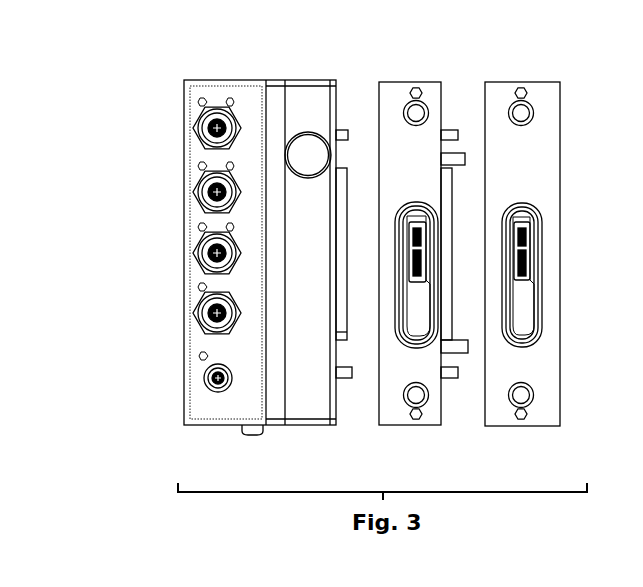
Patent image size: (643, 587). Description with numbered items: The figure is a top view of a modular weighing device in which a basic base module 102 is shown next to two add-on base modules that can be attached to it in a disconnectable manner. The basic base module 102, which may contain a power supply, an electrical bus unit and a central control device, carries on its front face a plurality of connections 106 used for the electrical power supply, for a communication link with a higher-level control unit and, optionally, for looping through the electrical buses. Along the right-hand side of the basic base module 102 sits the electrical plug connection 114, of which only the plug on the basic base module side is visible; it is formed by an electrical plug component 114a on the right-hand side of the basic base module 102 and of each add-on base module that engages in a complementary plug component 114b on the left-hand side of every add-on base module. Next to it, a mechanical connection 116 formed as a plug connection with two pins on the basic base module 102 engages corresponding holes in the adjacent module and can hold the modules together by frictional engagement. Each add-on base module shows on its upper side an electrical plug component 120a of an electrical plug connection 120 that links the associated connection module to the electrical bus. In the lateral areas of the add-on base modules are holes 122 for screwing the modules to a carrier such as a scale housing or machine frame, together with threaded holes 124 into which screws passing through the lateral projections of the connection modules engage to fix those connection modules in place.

The basic base module 102 is at (174, 111).
The connections 106 is at (207, 377).
The electrical plug connection 114 is at (372, 290).
The electrical plug component 114a is at (337, 233).
The complementary plug component 114b is at (477, 232).
The mechanical connection 116 is at (346, 386).
The electrical plug connection 120 is at (549, 229).
The electrical plug component 120a is at (526, 277).
The holes 122 is at (521, 395).
The threaded holes 124 is at (527, 93).